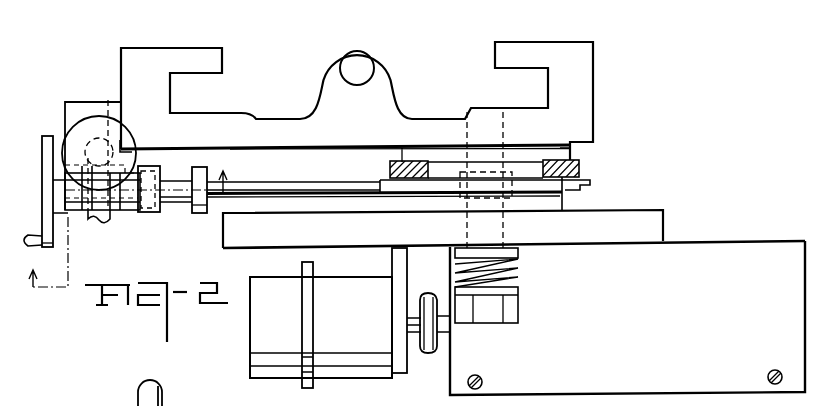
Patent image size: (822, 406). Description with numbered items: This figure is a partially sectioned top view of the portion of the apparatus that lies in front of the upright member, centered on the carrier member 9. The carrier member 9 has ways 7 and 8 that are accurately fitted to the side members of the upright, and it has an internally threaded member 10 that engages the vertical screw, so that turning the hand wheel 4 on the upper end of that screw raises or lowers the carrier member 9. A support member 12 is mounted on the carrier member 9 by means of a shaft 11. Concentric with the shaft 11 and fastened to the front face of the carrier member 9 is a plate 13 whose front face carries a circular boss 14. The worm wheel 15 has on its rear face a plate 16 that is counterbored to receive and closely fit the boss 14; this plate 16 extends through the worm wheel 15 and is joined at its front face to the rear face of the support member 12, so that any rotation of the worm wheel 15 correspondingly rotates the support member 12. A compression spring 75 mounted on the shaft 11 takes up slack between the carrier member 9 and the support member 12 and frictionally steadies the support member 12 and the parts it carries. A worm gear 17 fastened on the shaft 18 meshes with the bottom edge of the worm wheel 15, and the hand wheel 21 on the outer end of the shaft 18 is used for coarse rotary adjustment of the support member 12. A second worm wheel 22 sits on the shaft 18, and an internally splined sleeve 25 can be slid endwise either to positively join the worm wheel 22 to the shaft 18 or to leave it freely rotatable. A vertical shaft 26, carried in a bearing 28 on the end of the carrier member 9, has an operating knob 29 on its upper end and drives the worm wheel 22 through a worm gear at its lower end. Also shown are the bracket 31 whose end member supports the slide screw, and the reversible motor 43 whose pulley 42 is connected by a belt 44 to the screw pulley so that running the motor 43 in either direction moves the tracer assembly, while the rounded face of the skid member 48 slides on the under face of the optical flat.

The hand wheel 4 is at (128, 218).
The way 7 is at (203, 90).
The way 8 is at (523, 80).
The carrier member 9 is at (594, 128).
The internally threaded member 10 is at (385, 52).
The shaft 11 is at (519, 312).
The support member 12 is at (666, 222).
The plate 13 is at (588, 148).
The circular boss 14 is at (510, 162).
The worm wheel 15 is at (585, 197).
The plate 16 is at (583, 170).
The worm gear 17 is at (462, 205).
The shaft 18 is at (270, 183).
The hand wheel 21 is at (45, 136).
The worm wheel 22 is at (94, 221).
The sleeve 25 is at (140, 213).
The vertical shaft 26 is at (108, 100).
The bearing 28 is at (70, 102).
The operating knob 29 is at (122, 130).
The bracket 31 is at (722, 242).
The pulley 42 is at (418, 300).
The reversible motor 43 is at (335, 380).
The belt 44 is at (437, 354).
The skid member 48 is at (163, 391).
The compression spring 75 is at (518, 274).